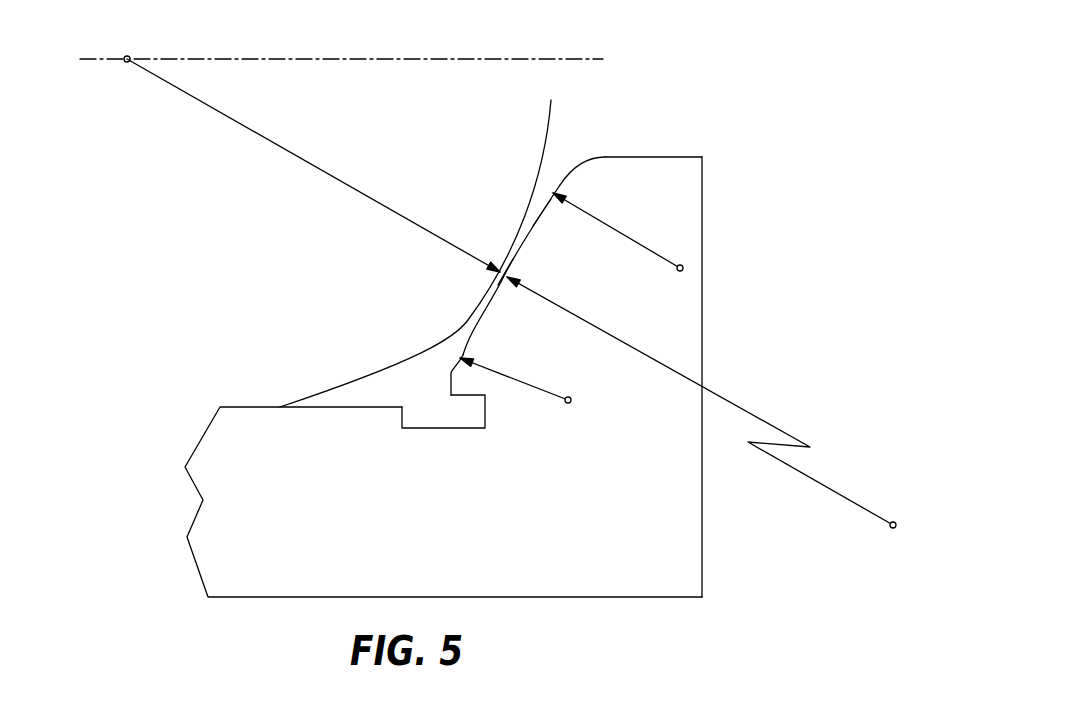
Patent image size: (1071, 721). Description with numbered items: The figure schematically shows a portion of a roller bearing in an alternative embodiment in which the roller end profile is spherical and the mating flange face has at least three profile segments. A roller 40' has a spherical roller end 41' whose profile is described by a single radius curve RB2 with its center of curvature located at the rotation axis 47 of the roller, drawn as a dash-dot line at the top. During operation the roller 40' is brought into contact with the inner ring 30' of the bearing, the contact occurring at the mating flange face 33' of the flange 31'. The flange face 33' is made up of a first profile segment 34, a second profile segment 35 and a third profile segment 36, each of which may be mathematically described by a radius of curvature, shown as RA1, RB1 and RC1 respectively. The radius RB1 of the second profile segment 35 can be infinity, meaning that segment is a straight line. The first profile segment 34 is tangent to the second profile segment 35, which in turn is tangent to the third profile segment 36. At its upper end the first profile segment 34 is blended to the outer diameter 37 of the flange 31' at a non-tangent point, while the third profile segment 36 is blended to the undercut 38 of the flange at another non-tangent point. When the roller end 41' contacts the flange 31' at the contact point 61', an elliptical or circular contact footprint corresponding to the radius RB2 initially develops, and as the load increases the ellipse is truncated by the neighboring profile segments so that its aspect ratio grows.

The rotation axis 47 is at (157, 59).
The spherical roller end 41' is at (456, 237).
The roller 40' is at (309, 268).
The outer diameter of the flange 37 is at (680, 157).
The first profile segment 34 is at (579, 159).
The mating flange face 33' is at (478, 270).
The second profile segment 35 is at (540, 214).
The contact point 61' is at (486, 236).
The flange 31' is at (724, 377).
The third profile segment 36 is at (450, 372).
The undercut 38 is at (420, 428).
The inner ring 30' is at (443, 530).
The radius of curvature of roller end RB2 is at (294, 154).
The radius of curvature of first profile segment RA1 is at (619, 235).
The radius of curvature of second profile segment RB1 is at (605, 331).
The radius of curvature of third profile segment RC1 is at (523, 383).